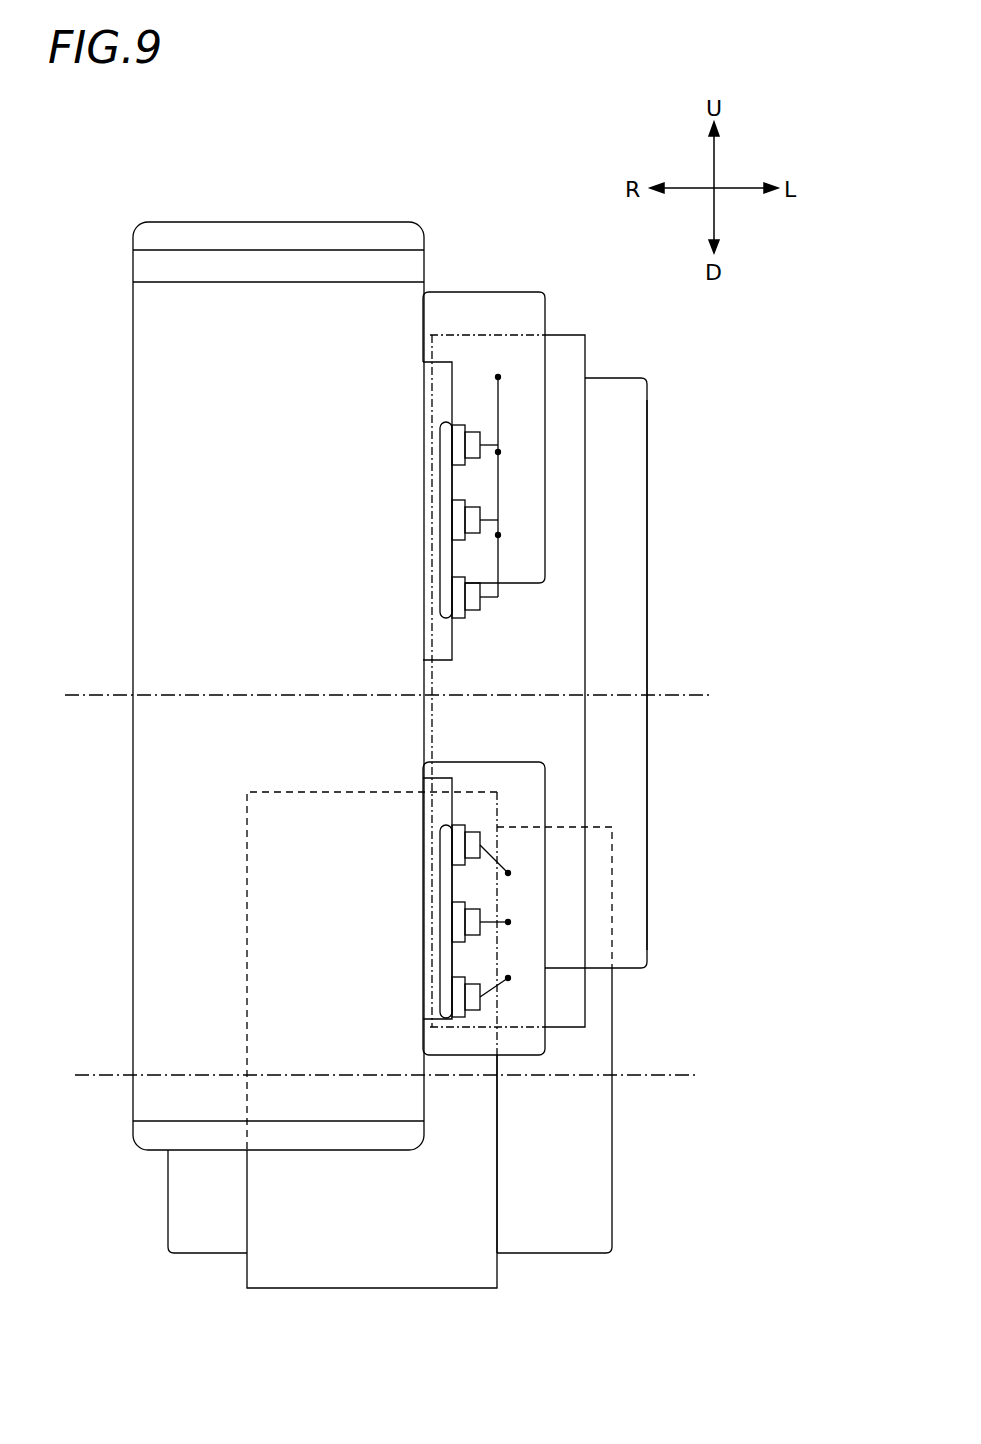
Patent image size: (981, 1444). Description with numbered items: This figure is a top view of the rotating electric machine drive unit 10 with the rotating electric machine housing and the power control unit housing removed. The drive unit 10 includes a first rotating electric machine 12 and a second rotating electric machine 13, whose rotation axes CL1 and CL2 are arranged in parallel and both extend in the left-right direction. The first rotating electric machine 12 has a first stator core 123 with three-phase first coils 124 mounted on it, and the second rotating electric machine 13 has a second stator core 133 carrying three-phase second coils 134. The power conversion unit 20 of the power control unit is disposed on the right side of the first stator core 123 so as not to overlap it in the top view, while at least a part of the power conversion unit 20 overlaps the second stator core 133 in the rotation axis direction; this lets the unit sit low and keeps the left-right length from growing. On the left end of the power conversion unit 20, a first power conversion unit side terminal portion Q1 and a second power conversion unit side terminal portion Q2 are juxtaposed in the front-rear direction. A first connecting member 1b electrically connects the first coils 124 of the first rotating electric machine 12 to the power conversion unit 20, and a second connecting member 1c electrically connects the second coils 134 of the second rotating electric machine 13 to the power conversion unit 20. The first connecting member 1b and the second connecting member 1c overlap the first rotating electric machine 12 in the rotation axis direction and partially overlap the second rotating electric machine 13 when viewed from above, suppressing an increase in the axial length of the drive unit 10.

The rotating electric machine drive unit 10 is at (118, 168).
The power conversion unit 20 is at (157, 320).
The first connecting member 1b is at (474, 322).
The second connecting member 1c is at (503, 1007).
The first stator core 123 is at (562, 365).
The first rotating electric machine 12 is at (625, 377).
The first coils 124 is at (625, 512).
The first power conversion unit side terminal portion Q1 is at (440, 522).
The second power conversion unit side terminal portion Q2 is at (440, 920).
The rotation axis CL1 is at (100, 693).
The rotation axis CL2 is at (690, 1080).
The second rotating electric machine 13 is at (615, 1168).
The second stator core 133 is at (395, 1270).
The second coils 134 is at (203, 1225).